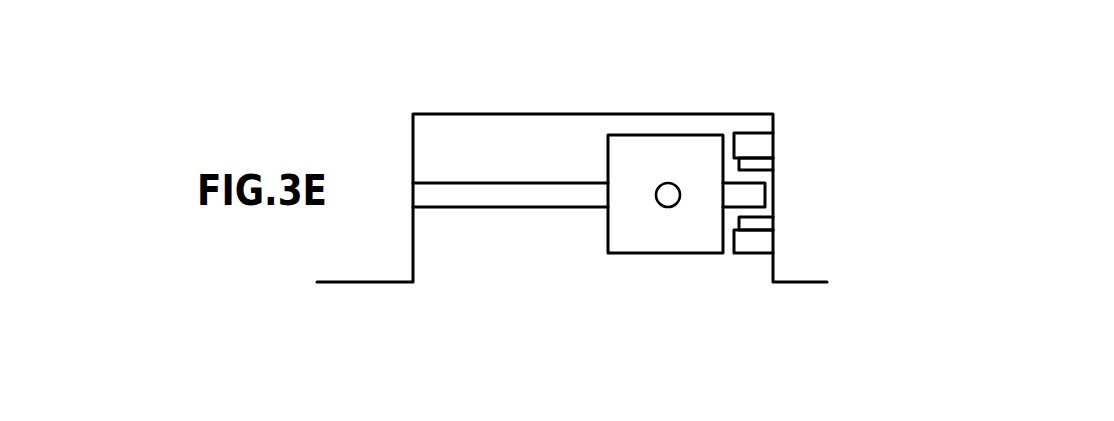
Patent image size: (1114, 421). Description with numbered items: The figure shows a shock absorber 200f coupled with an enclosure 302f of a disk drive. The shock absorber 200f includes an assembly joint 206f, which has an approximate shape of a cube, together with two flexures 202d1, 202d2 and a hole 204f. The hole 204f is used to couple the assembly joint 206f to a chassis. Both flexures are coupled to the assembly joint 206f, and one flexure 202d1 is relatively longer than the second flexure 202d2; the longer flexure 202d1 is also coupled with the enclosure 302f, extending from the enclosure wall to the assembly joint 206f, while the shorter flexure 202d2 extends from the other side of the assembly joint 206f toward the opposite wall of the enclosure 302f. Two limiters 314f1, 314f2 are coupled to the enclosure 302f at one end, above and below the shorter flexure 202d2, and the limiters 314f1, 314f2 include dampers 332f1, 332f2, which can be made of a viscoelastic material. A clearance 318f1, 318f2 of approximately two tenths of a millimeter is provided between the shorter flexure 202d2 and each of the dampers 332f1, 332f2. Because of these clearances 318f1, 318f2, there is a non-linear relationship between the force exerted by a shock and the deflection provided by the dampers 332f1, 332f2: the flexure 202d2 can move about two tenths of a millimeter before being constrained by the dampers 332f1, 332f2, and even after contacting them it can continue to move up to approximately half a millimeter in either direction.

The enclosure 302f is at (380, 170).
The shock absorber 200f is at (632, 168).
The flexure 202d1 is at (478, 193).
The hole 204f is at (668, 193).
The assembly joint 206f is at (627, 227).
The limiter 314f1 is at (758, 148).
The damper 332f1 is at (758, 163).
The clearance 318f1 is at (760, 175).
The flexure 202d2 is at (758, 195).
The clearance 318f2 is at (760, 213).
The damper 332f2 is at (760, 223).
The limiter 314f2 is at (757, 241).